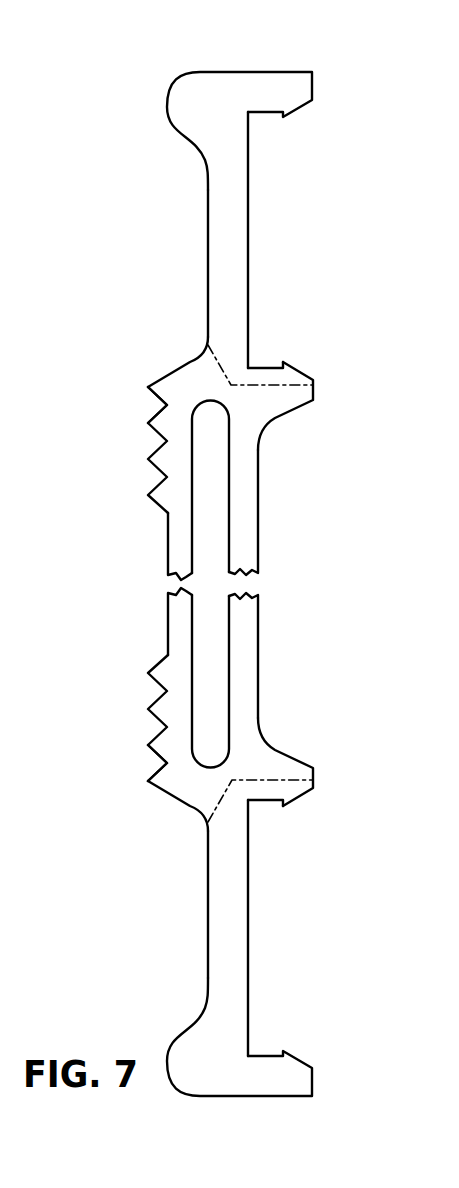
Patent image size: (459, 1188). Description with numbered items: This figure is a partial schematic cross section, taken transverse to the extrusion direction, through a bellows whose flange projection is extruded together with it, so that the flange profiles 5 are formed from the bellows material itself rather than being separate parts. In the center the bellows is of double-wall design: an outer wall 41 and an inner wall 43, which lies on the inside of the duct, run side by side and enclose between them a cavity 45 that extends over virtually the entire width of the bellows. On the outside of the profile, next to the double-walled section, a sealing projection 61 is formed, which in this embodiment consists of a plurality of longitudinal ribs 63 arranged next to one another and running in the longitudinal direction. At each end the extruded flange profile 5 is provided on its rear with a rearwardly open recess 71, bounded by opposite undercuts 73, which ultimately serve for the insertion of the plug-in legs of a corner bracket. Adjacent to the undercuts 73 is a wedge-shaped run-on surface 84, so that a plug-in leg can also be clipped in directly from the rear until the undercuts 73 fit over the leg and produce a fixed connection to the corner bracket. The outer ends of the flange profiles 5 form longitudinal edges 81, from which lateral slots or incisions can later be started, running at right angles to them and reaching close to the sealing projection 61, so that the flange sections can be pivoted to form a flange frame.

The flange profile 5 is at (153, 253).
The outer wall 41 is at (248, 517).
The inner wall 43 is at (177, 543).
The cavity 45 is at (213, 652).
The sealing projection 61 is at (133, 467).
The longitudinal rib 63 is at (148, 423).
The recess 71 is at (276, 238).
The undercut 73 is at (267, 122).
The longitudinal edge 81 is at (248, 68).
The wedge-shaped run-on surface 84 is at (306, 106).